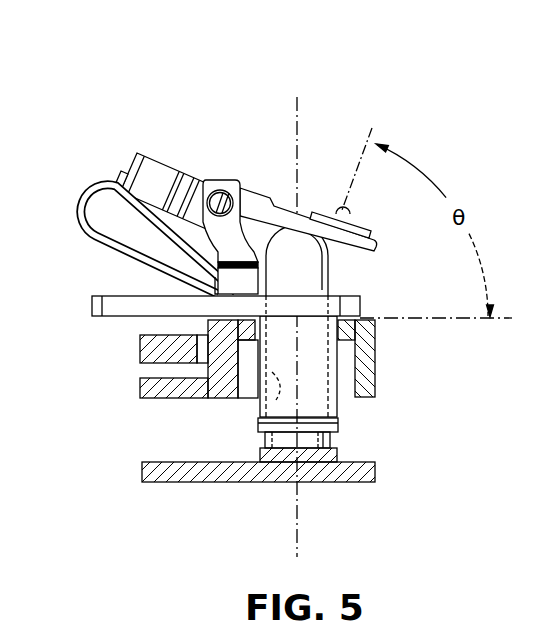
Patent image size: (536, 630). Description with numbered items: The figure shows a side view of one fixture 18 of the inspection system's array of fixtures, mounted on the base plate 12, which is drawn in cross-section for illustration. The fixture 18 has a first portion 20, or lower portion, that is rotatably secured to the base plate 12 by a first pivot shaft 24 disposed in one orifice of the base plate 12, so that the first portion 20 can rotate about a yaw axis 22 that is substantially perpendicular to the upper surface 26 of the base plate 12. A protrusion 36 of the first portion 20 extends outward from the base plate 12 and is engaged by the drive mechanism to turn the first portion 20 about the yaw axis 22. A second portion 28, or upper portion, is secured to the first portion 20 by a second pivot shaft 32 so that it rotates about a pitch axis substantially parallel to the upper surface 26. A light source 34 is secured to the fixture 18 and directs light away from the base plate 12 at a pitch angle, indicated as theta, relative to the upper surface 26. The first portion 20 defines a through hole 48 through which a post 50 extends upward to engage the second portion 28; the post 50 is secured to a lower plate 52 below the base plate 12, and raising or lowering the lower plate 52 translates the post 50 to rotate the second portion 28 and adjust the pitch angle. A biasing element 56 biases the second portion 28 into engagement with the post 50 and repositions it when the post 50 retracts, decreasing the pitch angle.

The base plate 12 is at (396, 336).
The fixture 18 is at (147, 110).
The first portion 20 is at (134, 320).
The yaw axis 22 is at (297, 553).
The first pivot shaft 24 is at (338, 382).
The upper surface 26 is at (363, 320).
The second portion 28 is at (159, 152).
The second pivot shaft 32 is at (233, 203).
The light source 34 is at (341, 207).
The protrusion 36 is at (118, 296).
The through hole 48 is at (283, 385).
The post 50 is at (290, 442).
The lower plate 52 is at (182, 483).
The biasing element 56 is at (90, 195).